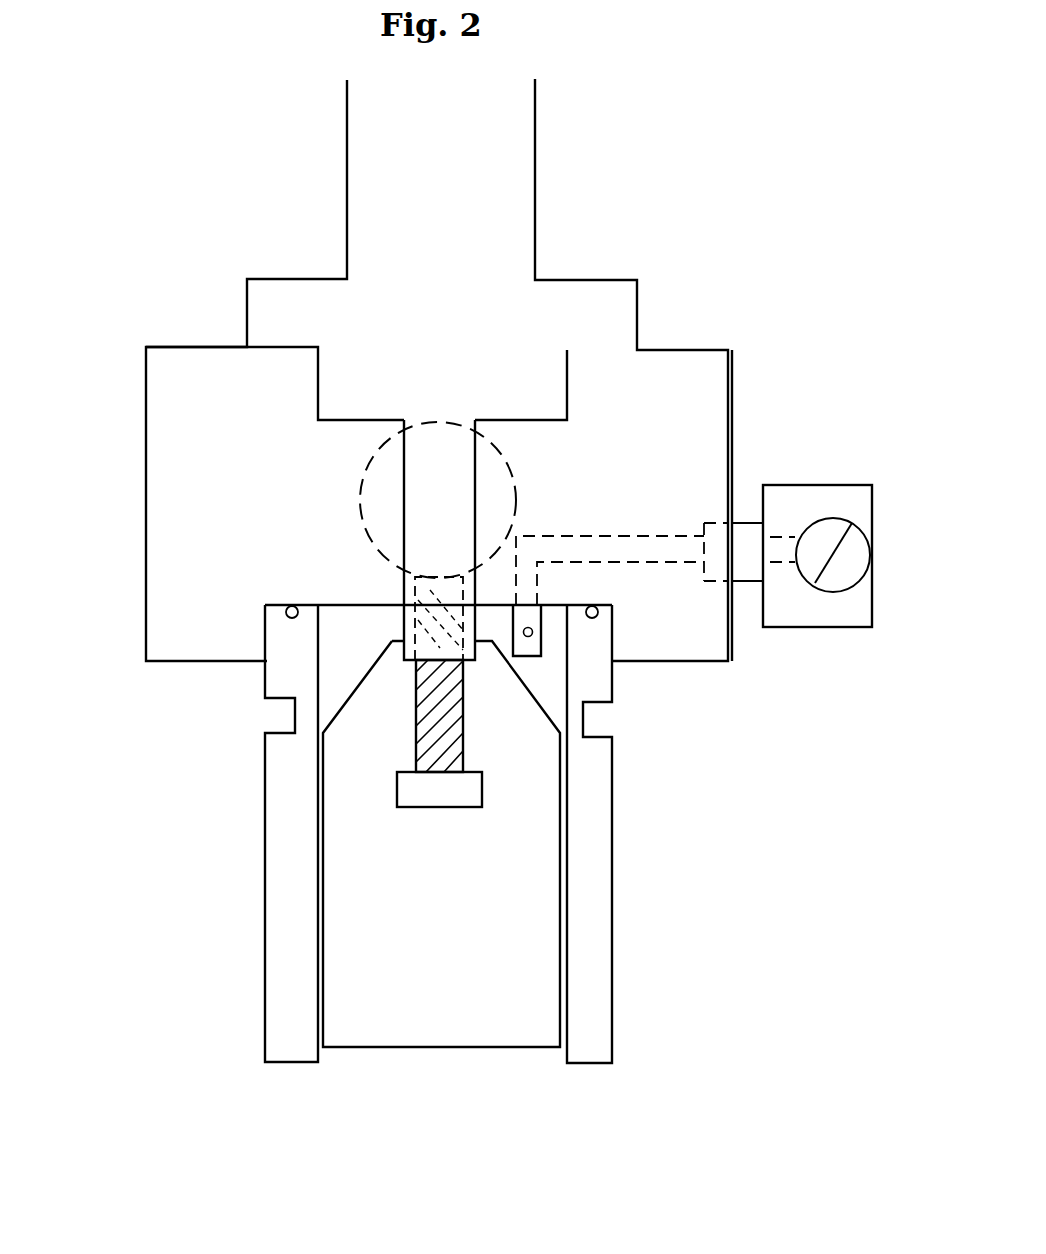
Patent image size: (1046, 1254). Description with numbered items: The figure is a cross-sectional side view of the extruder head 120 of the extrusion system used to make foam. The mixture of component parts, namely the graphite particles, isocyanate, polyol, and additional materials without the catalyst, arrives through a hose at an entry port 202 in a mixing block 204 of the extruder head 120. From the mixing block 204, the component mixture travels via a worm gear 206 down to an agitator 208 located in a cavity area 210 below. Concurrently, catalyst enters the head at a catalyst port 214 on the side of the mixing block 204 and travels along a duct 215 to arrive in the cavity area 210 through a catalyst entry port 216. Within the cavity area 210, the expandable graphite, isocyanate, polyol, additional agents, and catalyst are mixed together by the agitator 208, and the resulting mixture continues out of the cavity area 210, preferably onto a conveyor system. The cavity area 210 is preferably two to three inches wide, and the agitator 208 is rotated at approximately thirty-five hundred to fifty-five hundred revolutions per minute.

The extruder head 120 is at (695, 250).
The entry port 202 is at (356, 481).
The mixing block 204 is at (734, 430).
The worm gear 206 is at (414, 716).
The agitator 208 is at (396, 788).
The cavity area 210 is at (492, 945).
The catalyst port 214 is at (830, 637).
The duct 215 is at (640, 570).
The catalyst entry port 216 is at (547, 653).